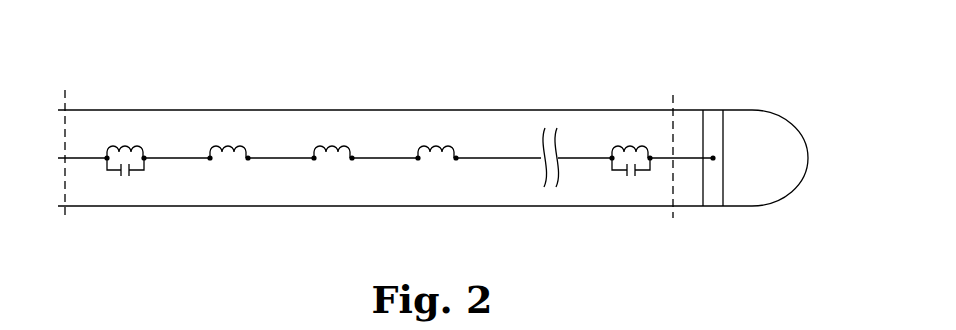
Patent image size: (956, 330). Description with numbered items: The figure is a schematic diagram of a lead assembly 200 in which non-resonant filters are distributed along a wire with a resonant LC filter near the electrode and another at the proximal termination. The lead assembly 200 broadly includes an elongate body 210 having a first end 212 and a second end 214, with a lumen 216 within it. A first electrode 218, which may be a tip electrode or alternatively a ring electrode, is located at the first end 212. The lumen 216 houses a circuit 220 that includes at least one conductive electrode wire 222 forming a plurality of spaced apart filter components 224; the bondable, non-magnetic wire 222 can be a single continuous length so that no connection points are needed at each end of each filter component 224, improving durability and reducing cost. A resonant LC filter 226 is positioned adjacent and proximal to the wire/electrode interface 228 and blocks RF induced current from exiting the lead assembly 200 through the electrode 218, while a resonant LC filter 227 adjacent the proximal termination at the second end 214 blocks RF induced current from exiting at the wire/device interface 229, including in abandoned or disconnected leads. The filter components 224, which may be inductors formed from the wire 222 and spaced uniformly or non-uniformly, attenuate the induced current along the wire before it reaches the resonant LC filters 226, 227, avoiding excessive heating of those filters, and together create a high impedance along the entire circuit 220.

The lead assembly 200 is at (429, 62).
The elongate body 210 is at (558, 108).
The first end 212 is at (787, 118).
The second end 214 is at (130, 128).
The lumen 216 is at (282, 140).
The first electrode 218 is at (713, 120).
The circuit 220 is at (182, 150).
The conductive electrode wire 222 is at (497, 162).
The filter components 224 is at (430, 152).
The resonant LC filter 226 is at (634, 143).
The resonant LC filter 227 is at (137, 175).
The wire/electrode interface 228 is at (673, 222).
The wire/device interface 229 is at (64, 225).